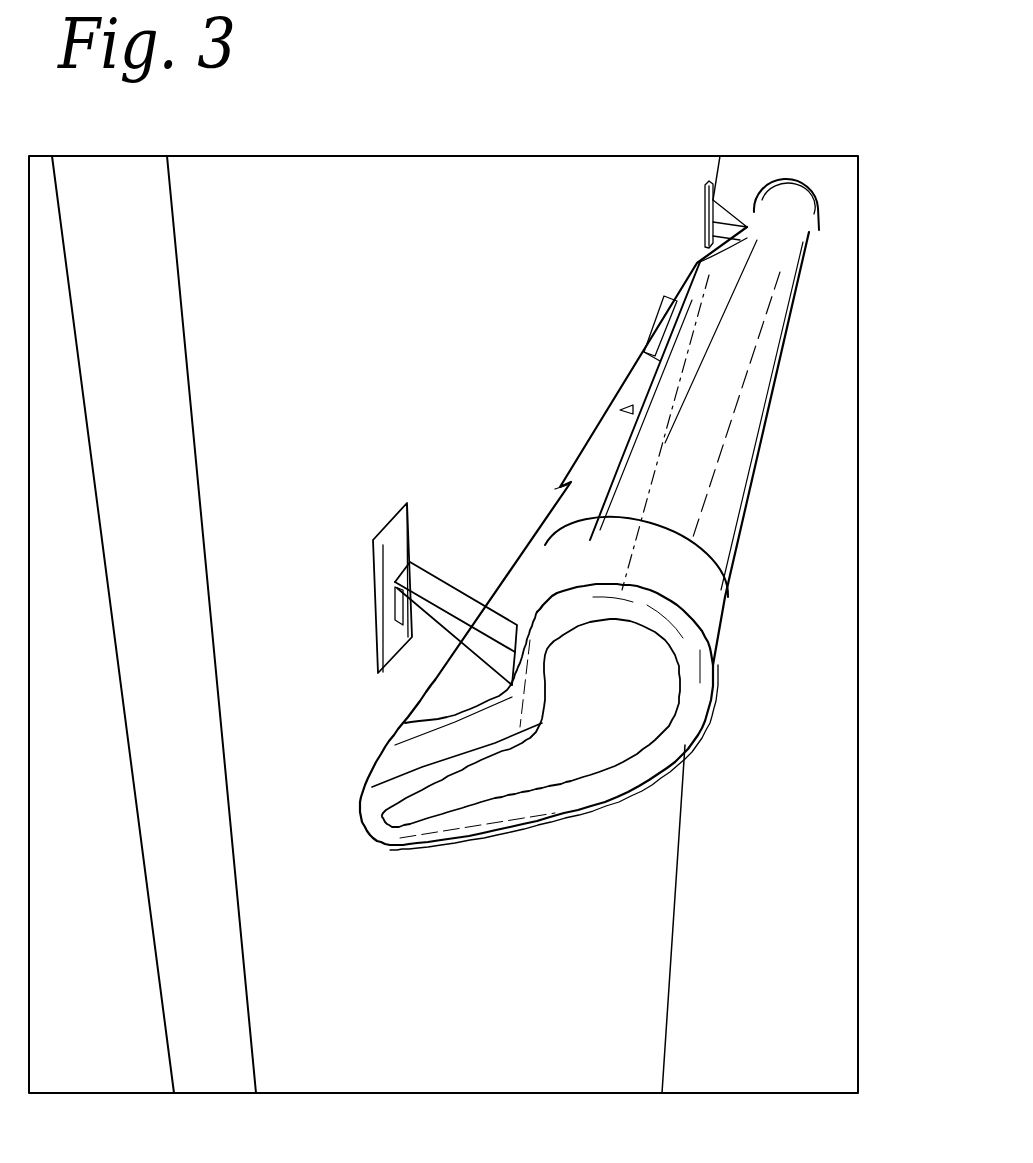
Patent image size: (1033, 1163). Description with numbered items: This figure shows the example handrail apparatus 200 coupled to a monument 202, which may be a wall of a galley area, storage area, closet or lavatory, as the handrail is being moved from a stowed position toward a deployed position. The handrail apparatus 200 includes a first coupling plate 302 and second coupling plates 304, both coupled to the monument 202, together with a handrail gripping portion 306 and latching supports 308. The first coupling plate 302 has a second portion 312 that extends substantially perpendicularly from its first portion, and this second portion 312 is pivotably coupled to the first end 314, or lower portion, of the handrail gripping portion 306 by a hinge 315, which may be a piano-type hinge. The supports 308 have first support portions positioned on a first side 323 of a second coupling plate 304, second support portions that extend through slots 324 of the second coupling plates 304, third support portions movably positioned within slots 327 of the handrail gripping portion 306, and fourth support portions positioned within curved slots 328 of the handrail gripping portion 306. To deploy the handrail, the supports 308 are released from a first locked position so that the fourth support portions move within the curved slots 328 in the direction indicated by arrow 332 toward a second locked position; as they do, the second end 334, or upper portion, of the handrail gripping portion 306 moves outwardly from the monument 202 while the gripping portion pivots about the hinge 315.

The handrail apparatus 200 is at (750, 517).
The monument 202 is at (227, 416).
The first coupling plate 302 is at (653, 323).
The second coupling plates 304 is at (707, 207).
The handrail gripping portion 306 is at (590, 767).
The supports 308 is at (700, 222).
The second portion 312 is at (610, 410).
The first end 314 is at (417, 818).
The hinge 315 is at (575, 442).
The first side 323 is at (80, 721).
The slots 324 is at (397, 607).
The slots 327 is at (408, 730).
The curved slots 328 is at (450, 713).
The arrow 332 is at (630, 938).
The second end 334 is at (648, 712).